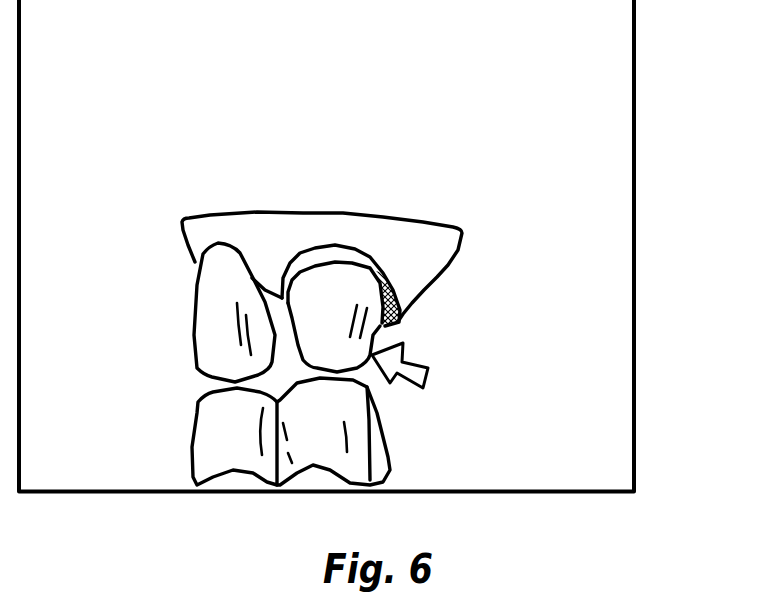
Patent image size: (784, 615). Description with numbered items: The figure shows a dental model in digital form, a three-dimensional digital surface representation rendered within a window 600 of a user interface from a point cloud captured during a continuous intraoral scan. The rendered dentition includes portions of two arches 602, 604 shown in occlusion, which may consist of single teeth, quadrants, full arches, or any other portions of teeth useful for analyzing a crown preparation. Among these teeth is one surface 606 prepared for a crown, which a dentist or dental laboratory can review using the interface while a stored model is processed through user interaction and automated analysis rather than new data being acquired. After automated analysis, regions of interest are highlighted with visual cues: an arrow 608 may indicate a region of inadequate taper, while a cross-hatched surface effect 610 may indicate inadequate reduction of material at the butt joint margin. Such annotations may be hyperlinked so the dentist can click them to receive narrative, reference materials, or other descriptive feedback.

The window 600 is at (636, 69).
The arch 602 is at (152, 290).
The arch 604 is at (174, 437).
The surface prepared for a crown 606 is at (365, 225).
The arrow 608 is at (428, 368).
The surface effect 610 is at (390, 273).